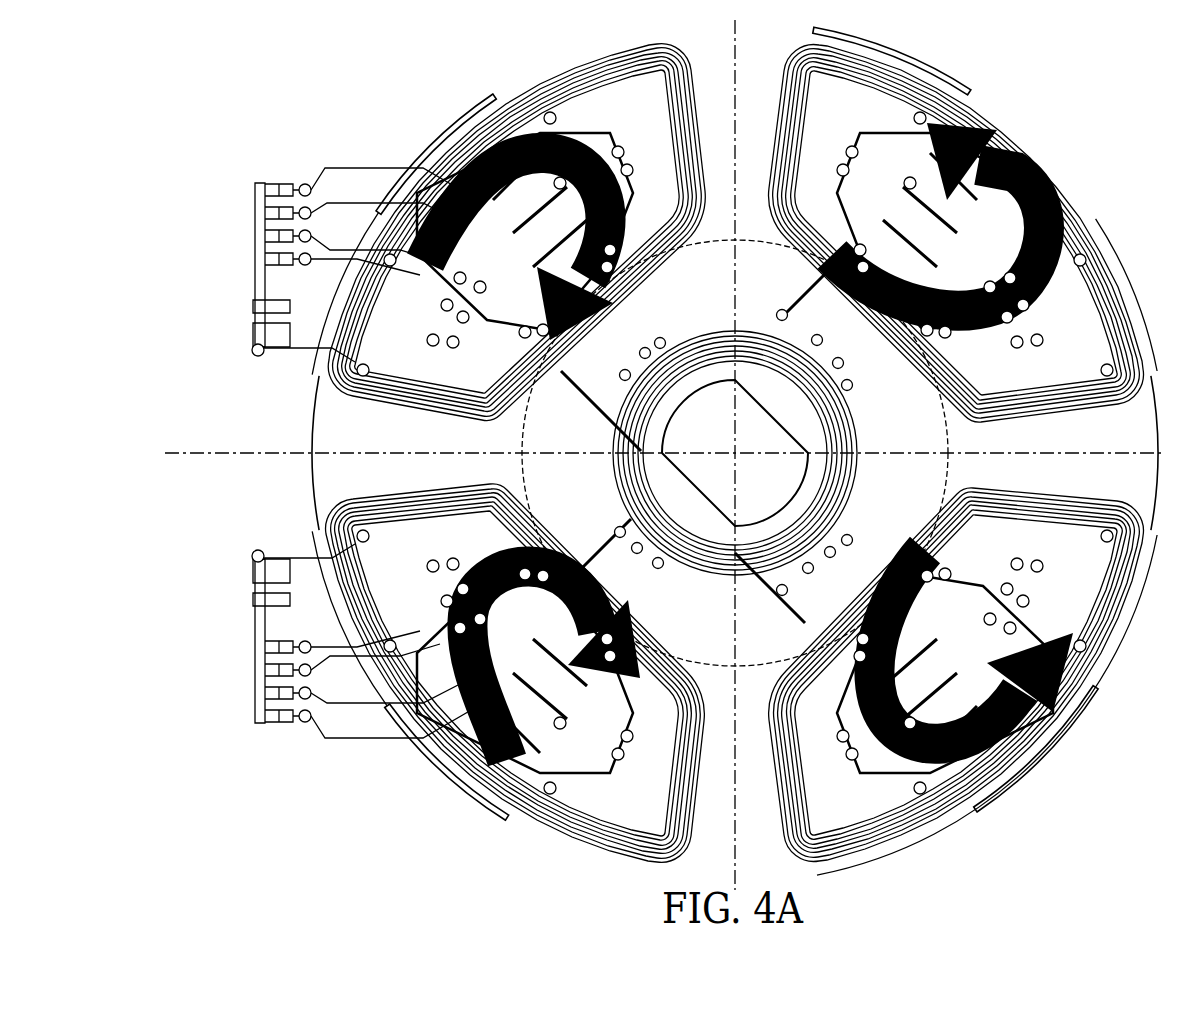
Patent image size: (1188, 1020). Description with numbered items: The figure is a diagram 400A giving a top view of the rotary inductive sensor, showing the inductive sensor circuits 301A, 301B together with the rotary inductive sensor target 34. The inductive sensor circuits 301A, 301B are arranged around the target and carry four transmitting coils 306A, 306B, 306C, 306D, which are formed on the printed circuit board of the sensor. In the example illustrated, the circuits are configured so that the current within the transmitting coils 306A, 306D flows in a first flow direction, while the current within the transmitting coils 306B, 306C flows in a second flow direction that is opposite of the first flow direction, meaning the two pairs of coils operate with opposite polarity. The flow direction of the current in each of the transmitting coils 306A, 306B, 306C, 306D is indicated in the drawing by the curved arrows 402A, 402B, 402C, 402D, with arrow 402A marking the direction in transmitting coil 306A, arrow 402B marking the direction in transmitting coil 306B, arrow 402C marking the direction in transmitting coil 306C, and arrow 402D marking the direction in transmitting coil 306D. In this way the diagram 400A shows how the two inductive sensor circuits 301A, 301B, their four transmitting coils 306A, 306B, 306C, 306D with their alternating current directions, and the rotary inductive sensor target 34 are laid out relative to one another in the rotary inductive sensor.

The diagram 400A is at (300, 76).
The rotary inductive sensor target 34 is at (312, 441).
The transmitting coil 306A is at (572, 68).
The transmitting coil 306B is at (1040, 743).
The transmitting coil 306C is at (1033, 167).
The transmitting coil 306D is at (567, 833).
The arrow 402A is at (475, 128).
The arrow 402B is at (975, 793).
The arrow 402C is at (993, 130).
The arrow 402D is at (460, 735).
The inductive sensor circuit 301A is at (262, 357).
The inductive sensor circuit 301B is at (270, 535).